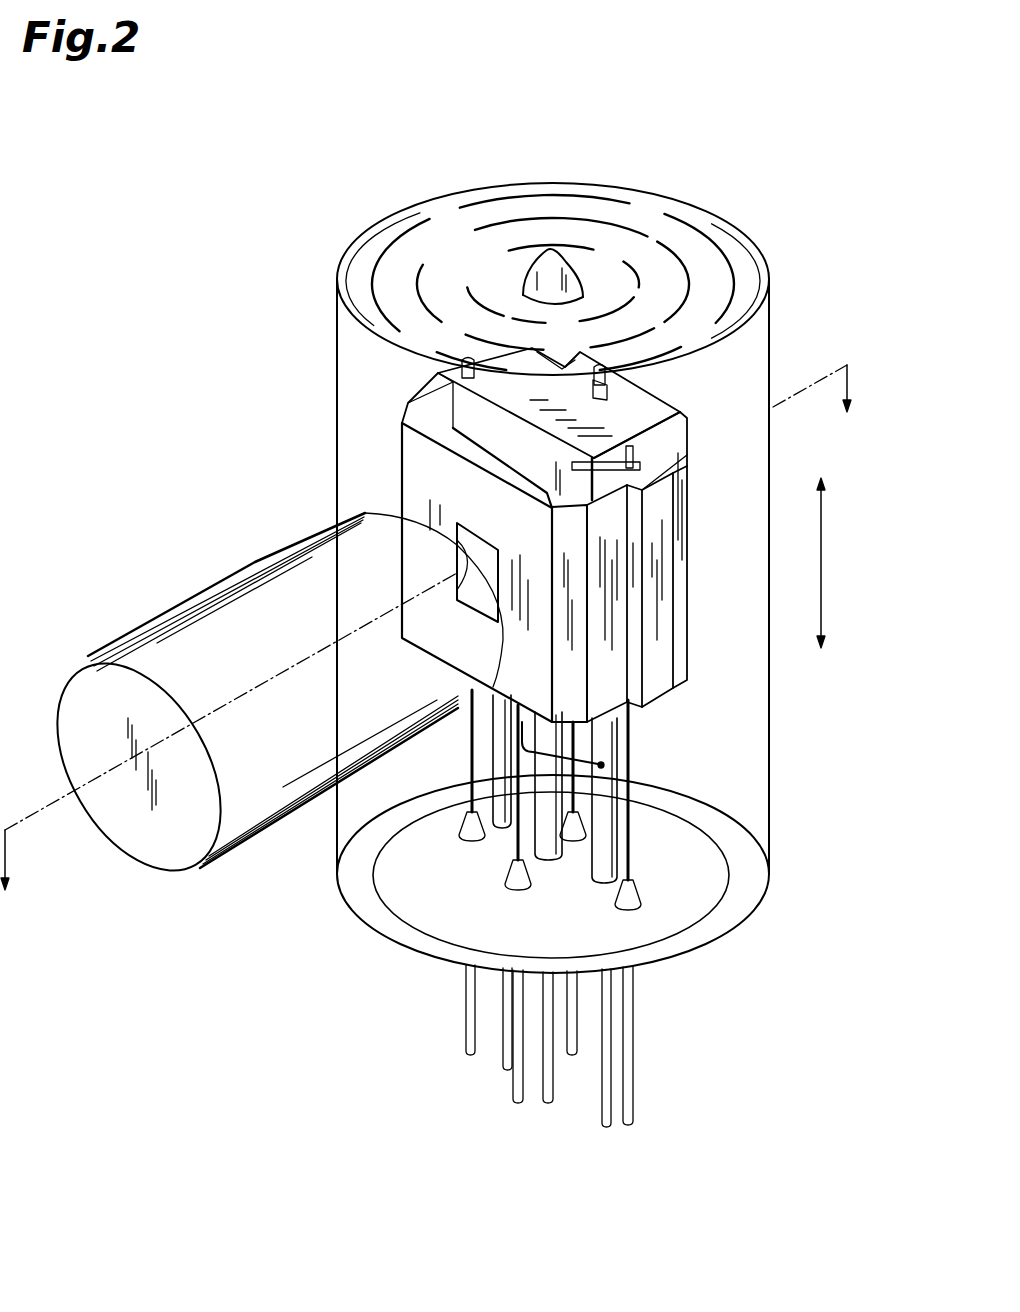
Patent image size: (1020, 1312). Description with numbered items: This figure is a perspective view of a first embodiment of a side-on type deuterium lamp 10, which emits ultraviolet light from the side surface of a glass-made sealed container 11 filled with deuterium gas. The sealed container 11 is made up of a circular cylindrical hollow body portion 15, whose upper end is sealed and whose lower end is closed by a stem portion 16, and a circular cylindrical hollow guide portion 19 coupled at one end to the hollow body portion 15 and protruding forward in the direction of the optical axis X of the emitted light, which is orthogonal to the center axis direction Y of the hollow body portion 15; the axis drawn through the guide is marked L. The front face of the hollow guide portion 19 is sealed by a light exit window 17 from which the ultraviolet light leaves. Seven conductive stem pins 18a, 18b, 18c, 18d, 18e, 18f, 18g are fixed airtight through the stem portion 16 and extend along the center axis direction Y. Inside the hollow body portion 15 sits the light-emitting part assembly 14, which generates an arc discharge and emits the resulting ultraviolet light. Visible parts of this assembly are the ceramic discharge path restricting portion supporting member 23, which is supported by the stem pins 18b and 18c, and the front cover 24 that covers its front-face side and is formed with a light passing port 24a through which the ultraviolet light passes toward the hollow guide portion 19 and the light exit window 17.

The deuterium lamp 10 is at (336, 178).
The sealed container 11 is at (325, 251).
The light-emitting part assembly 14 is at (396, 474).
The hollow body portion 15 is at (345, 418).
The stem portion 16 is at (377, 913).
The light exit window 17 is at (177, 854).
The stem pin 18a is at (515, 1100).
The stem pin 18b is at (468, 1032).
The stem pin 18c is at (628, 1115).
The stem pin 18d is at (548, 1105).
The stem pin 18e is at (505, 1063).
The stem pin 18f is at (606, 1125).
The stem pin 18g is at (572, 1060).
The hollow guide portion 19 is at (150, 628).
The discharge path restricting portion supporting member 23 is at (657, 535).
The front cover 24 is at (417, 518).
The light passing port 24a is at (457, 567).
The optical axis L is at (109, 775).
The optical axis X is at (54, 838).
The center axis direction Y is at (822, 590).